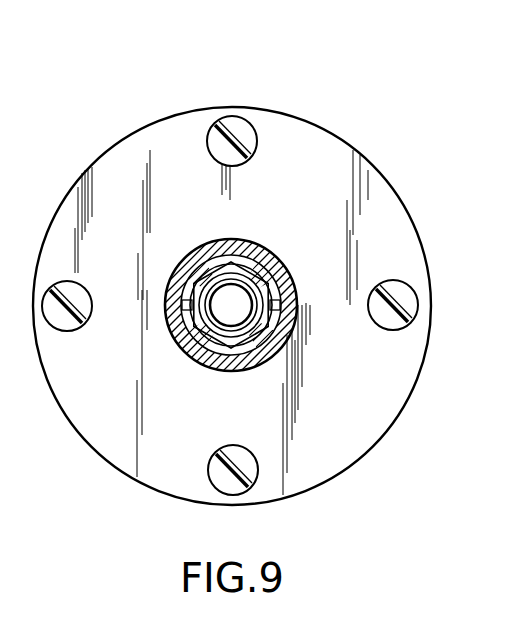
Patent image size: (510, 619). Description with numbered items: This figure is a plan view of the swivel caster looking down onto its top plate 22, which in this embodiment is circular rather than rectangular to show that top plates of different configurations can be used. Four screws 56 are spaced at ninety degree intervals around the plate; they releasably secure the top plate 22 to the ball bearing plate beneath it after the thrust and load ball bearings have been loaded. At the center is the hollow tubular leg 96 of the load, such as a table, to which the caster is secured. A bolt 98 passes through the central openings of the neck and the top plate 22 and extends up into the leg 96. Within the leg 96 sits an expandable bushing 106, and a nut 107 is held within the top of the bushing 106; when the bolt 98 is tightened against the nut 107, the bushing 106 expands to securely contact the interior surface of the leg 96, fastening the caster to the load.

The top plate 22 is at (380, 161).
The screws 56 is at (246, 122).
The hollow tubular leg 96 is at (243, 239).
The nut 107 is at (262, 283).
The expandable bushing 106 is at (271, 297).
The bolt 98 is at (203, 340).